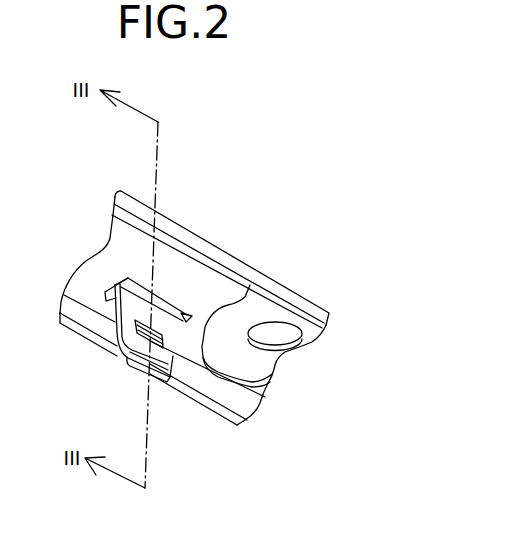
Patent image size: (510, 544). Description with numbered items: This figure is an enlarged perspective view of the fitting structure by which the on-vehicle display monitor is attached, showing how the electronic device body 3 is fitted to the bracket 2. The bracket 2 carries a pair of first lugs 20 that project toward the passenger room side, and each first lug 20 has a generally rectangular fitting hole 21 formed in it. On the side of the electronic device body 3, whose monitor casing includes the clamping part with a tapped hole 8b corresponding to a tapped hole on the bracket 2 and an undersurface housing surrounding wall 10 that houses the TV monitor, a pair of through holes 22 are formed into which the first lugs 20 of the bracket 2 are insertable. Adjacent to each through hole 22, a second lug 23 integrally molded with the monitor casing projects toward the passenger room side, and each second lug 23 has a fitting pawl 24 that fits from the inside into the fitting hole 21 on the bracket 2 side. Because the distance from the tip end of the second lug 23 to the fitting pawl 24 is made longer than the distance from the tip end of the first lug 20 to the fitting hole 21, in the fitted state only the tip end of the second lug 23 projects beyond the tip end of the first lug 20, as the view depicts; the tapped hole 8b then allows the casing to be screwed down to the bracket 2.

The bracket 2 is at (252, 277).
The electronic device body 3 is at (112, 268).
The tapped hole 8b is at (283, 335).
The housing surrounding wall 10 is at (220, 395).
The first lug 20 is at (168, 318).
The fitting hole 21 is at (192, 321).
The through hole 22 is at (189, 312).
The second lug 23 is at (135, 358).
The fitting pawl 24 is at (130, 350).